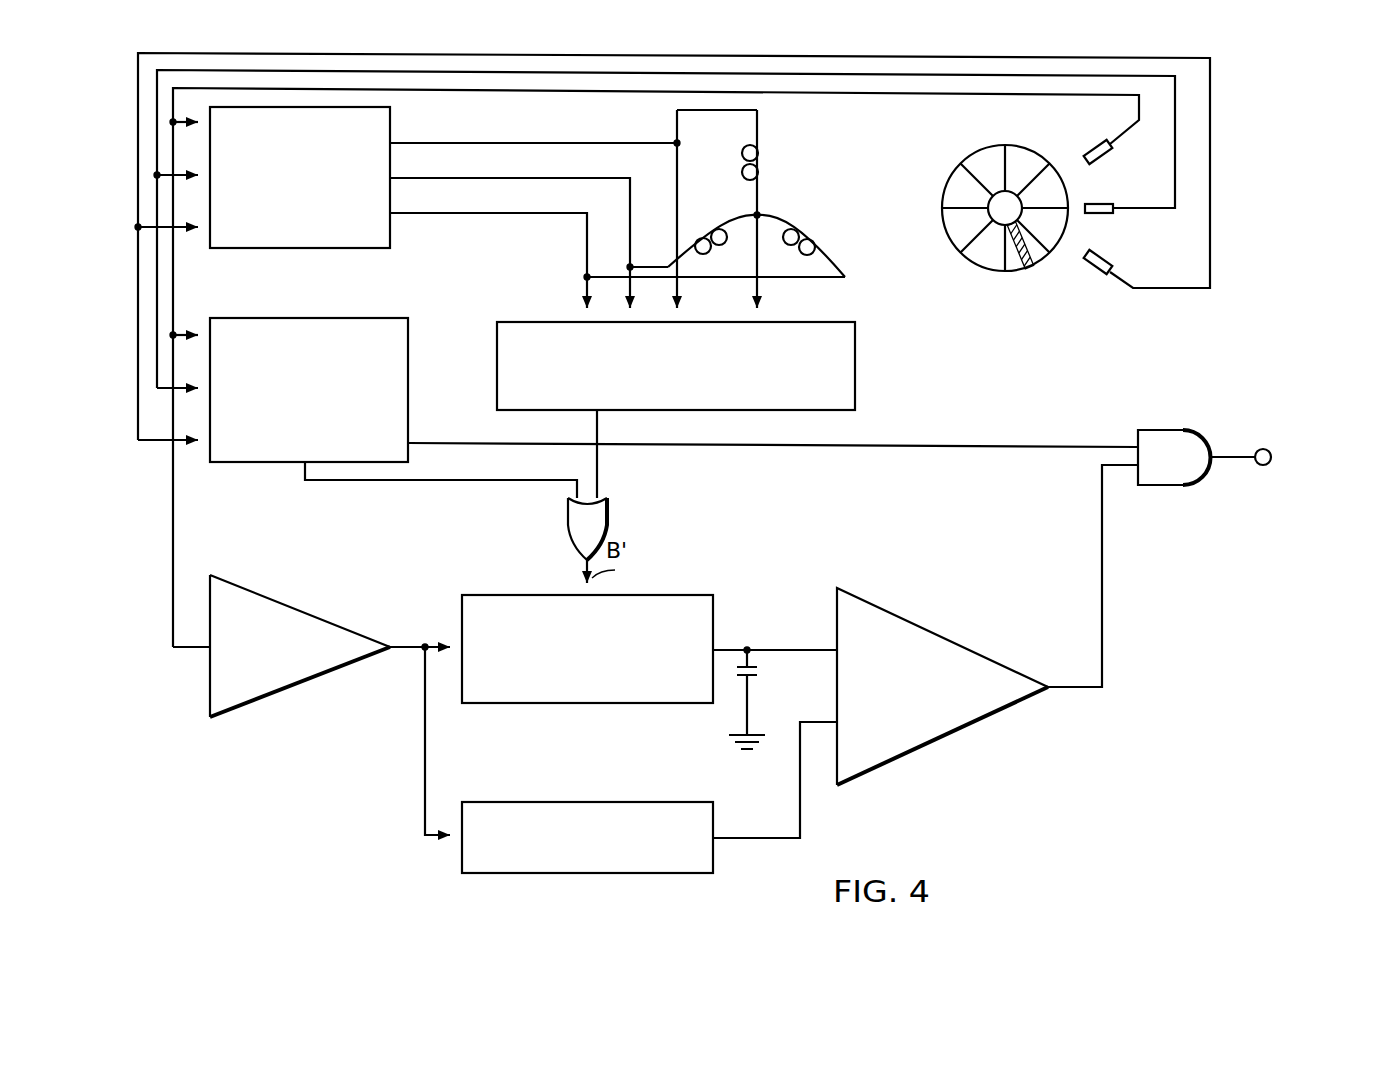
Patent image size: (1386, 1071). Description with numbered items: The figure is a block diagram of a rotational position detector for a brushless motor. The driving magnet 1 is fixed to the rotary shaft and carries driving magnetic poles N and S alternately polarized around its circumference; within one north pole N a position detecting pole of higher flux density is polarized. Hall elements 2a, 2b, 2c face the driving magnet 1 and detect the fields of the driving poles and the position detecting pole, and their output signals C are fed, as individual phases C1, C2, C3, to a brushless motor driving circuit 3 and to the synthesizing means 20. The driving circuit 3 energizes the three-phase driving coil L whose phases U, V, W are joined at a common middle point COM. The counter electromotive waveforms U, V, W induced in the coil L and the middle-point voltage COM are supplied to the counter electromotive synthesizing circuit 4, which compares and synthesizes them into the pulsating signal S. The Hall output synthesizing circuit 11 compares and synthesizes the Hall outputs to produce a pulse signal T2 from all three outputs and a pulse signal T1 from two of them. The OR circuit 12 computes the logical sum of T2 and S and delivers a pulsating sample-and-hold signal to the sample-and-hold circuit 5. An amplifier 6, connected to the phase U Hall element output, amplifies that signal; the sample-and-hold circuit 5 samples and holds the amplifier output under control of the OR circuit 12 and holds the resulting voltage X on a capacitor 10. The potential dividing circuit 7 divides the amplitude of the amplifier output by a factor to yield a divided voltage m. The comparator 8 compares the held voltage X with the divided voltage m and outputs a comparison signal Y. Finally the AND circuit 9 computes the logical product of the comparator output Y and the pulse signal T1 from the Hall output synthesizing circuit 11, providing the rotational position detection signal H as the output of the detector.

The driving magnet 1 is at (1015, 125).
The Hall element 2a is at (1115, 158).
The Hall element 2b is at (1100, 215).
The Hall element 2c is at (1090, 267).
The brushless motor driving circuit 3 is at (312, 250).
The counter electromotive synthesizing circuit 4 is at (560, 321).
The sample-and-hold circuit 5 is at (553, 594).
The amplifier 6 is at (253, 706).
The potential dividing circuit 7 is at (588, 801).
The comparator 8 is at (878, 770).
The AND circuit 9 is at (1173, 430).
The capacitor 10 is at (758, 672).
The Hall output synthesizing circuit 11 is at (255, 316).
The OR circuit 12 is at (607, 523).
The synthesizing means 20 is at (316, 774).
The driving coil L is at (765, 170).
The Hall element outputs C is at (122, 204).
The Hall output signal C1 is at (173, 552).
The Hall output signal C2 is at (157, 283).
The Hall output signal C3 is at (138, 344).
The pulse signal T1 is at (1068, 445).
The pulse signal T2 is at (473, 480).
The pulsating signal S is at (600, 490).
The held voltage X is at (749, 646).
The comparison output Y is at (1088, 690).
The divided voltage m is at (783, 838).
The position signal output H is at (1245, 460).
The counter electromotive waveform U is at (938, 126).
The counter electromotive waveform V is at (904, 207).
The counter electromotive waveform W is at (980, 254).
The coil middle-point voltage COM is at (760, 300).
The driving magnetic pole N is at (1035, 255).